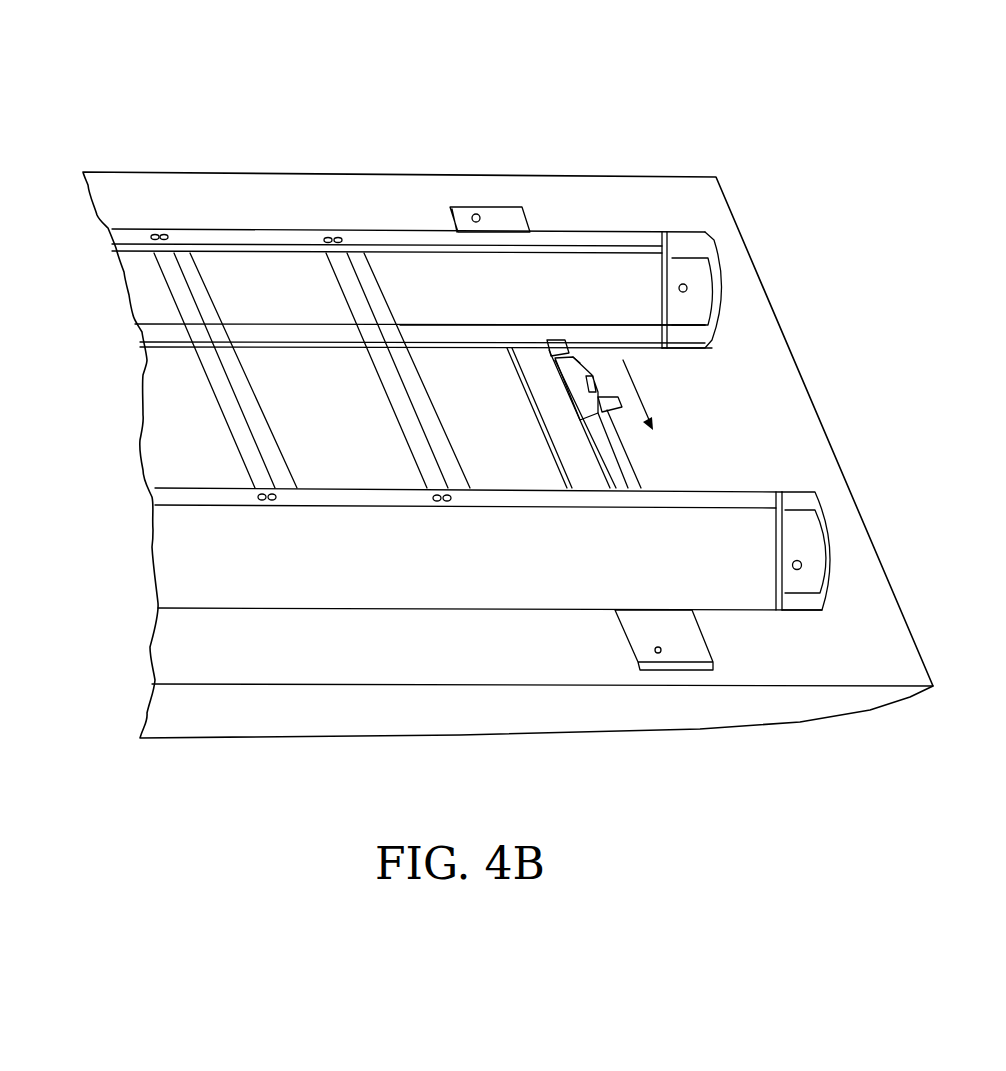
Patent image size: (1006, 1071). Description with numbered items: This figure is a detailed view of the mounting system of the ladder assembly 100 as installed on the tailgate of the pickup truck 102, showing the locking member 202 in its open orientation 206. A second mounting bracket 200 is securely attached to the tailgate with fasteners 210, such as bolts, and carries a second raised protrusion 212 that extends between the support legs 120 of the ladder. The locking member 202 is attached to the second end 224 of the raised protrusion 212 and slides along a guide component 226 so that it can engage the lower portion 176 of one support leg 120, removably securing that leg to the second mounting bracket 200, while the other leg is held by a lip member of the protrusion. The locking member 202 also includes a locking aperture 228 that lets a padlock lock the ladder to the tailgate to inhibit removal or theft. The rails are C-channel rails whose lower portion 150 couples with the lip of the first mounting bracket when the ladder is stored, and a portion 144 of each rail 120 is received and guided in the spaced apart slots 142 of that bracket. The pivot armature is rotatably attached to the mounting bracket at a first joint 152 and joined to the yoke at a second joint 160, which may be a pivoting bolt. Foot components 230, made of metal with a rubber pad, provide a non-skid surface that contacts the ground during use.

The ladder assembly 100 is at (612, 278).
The pickup truck 102 is at (573, 190).
The support leg 120 is at (483, 560).
The slots 142 is at (453, 138).
The portion of support leg 144 is at (640, 305).
The lower portion of C-channel rail 150 is at (255, 280).
The first joint 152 is at (205, 295).
The second joint 160 is at (748, 418).
The lower portion of support leg 176 is at (452, 330).
The second mounting bracket 200 is at (698, 647).
The locking member 202 is at (623, 400).
The open orientation 206 is at (511, 402).
The fasteners 210 is at (662, 650).
The second raised protrusion 212 is at (605, 455).
The second end of raised protrusion 224 is at (578, 314).
The guide component 226 is at (588, 377).
The locking aperture 228 is at (576, 357).
The foot components 230 is at (697, 270).